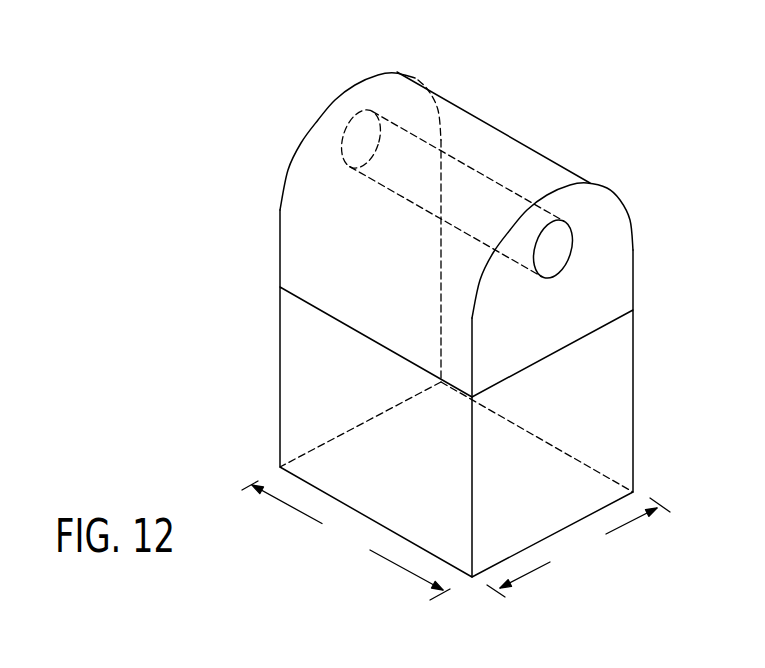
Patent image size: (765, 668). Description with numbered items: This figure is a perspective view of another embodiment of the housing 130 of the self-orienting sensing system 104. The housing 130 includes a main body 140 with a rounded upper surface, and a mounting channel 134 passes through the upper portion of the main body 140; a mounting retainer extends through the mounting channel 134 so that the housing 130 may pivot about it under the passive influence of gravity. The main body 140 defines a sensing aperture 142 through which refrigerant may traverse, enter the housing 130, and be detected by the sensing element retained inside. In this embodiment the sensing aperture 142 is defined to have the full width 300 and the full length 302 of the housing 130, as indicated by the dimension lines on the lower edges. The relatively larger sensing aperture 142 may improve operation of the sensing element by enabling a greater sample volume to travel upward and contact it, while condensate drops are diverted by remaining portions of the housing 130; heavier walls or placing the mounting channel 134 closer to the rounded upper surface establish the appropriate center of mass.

The self-orienting sensing system 104 is at (408, 338).
The housing 130 is at (356, 74).
The mounting channel 134 is at (488, 177).
The main body 140 is at (279, 252).
The sensing aperture 142 is at (436, 511).
The full width 300 is at (578, 547).
The full length 302 is at (346, 540).